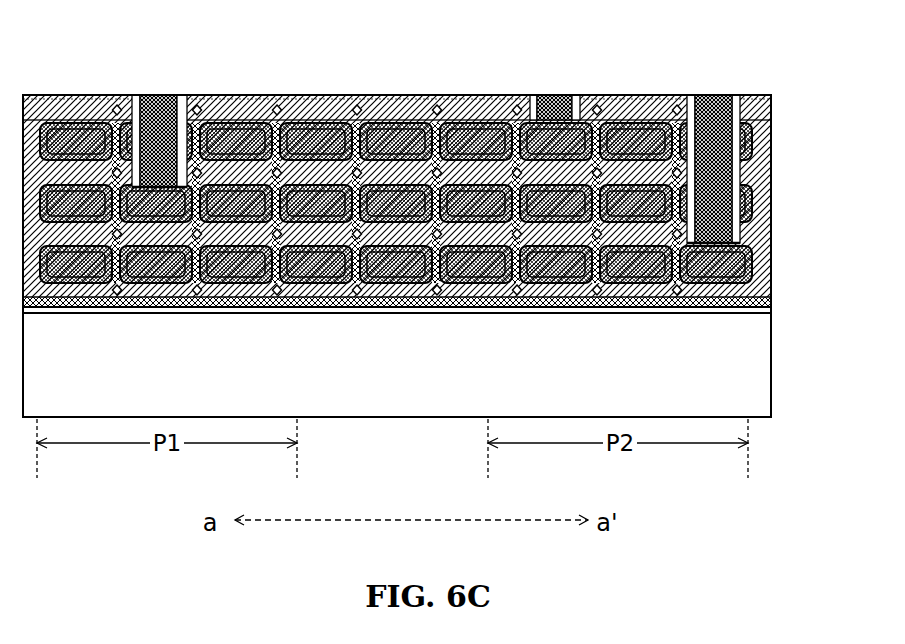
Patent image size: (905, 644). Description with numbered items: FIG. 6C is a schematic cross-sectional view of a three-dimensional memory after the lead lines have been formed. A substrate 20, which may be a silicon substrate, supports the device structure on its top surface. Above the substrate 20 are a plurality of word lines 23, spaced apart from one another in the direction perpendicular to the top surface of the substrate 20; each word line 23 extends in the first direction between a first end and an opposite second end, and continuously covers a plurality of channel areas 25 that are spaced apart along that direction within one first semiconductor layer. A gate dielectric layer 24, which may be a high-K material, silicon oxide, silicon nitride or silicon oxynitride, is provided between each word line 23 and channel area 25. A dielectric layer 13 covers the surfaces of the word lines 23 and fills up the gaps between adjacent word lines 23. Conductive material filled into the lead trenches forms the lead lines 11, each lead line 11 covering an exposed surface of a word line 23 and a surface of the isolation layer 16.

The lead line 11 is at (706, 98).
The dielectric layer 13 is at (377, 110).
The isolation layer 16 is at (735, 103).
The substrate 20 is at (772, 377).
The word line 23 is at (467, 123).
The gate dielectric layer 24 is at (288, 132).
The channel area 25 is at (237, 137).